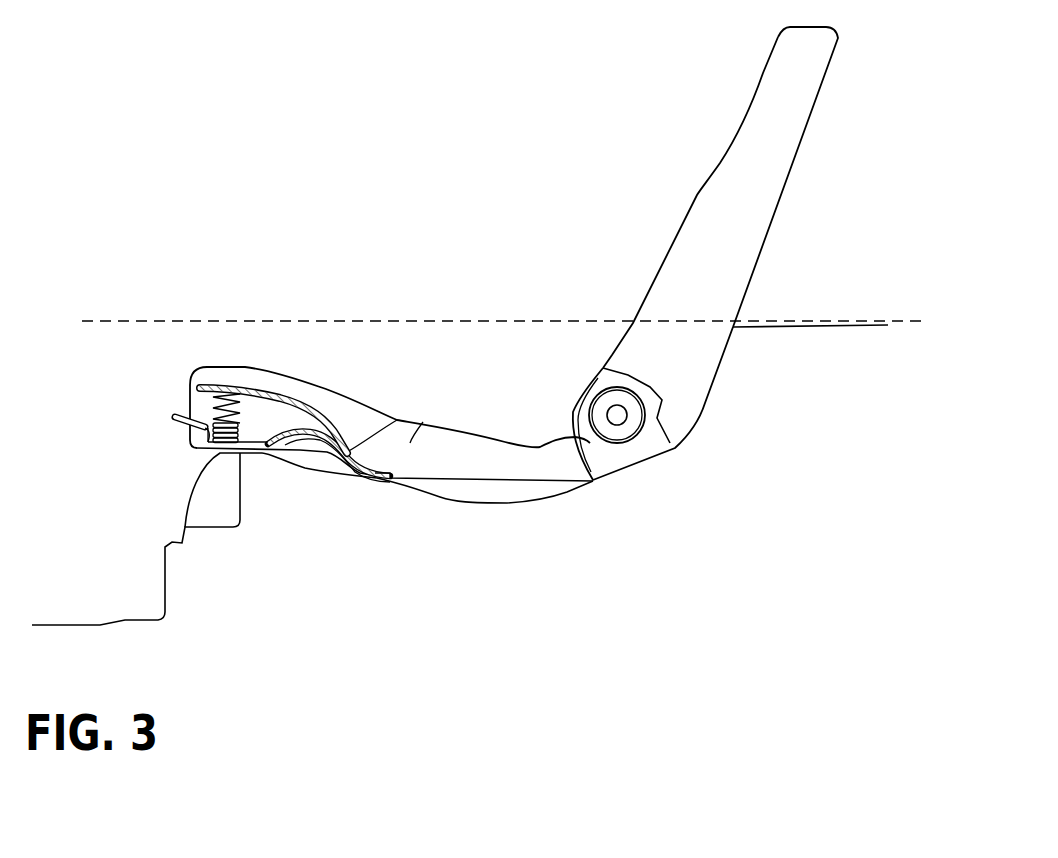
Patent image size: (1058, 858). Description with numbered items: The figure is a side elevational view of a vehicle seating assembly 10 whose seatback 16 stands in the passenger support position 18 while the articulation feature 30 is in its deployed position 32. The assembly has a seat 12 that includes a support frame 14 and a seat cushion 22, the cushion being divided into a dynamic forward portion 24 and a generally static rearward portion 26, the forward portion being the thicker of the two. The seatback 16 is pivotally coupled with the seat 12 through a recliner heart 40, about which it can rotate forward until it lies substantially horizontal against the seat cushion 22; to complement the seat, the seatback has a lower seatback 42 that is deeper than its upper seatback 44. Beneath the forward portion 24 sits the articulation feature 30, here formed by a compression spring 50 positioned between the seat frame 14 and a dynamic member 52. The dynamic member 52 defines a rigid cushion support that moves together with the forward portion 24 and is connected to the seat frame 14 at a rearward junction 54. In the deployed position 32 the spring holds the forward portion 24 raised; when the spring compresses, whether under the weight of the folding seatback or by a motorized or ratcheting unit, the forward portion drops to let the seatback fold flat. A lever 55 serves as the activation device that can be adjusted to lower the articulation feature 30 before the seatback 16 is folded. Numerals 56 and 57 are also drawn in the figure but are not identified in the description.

The vehicle seating assembly 10 is at (213, 147).
The seat 12 is at (357, 420).
The support frame 14 is at (341, 501).
The seatback 16 is at (763, 230).
The passenger support position 18 is at (722, 277).
The seat cushion 22 is at (423, 422).
The dynamic forward portion 24 is at (222, 377).
The generally static rearward portion 26 is at (537, 463).
The articulation feature 30 is at (178, 458).
The deployed position 32 is at (205, 349).
The recliner heart 40 is at (620, 425).
The lower seatback 42 is at (667, 283).
The upper seatback 44 is at (771, 90).
The compression spring 50 is at (200, 410).
The dynamic member 52 is at (281, 388).
The rearward junction 54 is at (332, 450).
The lever 55 is at (180, 420).
The housing top 56 is at (193, 370).
The link member 57 is at (403, 420).